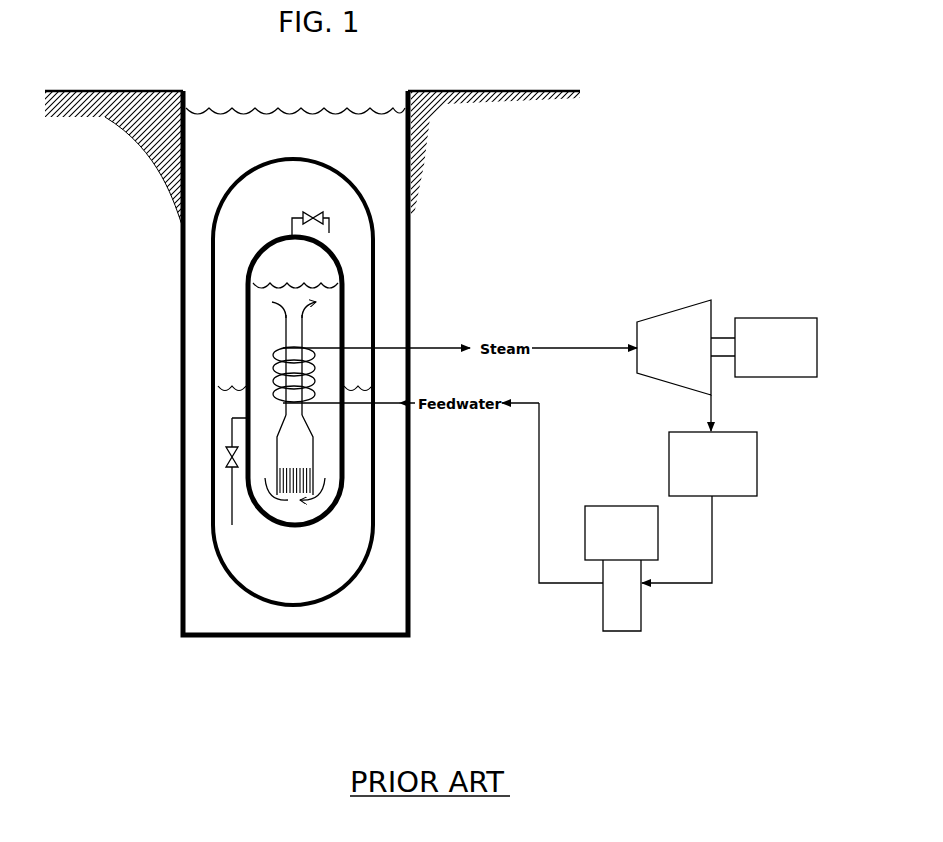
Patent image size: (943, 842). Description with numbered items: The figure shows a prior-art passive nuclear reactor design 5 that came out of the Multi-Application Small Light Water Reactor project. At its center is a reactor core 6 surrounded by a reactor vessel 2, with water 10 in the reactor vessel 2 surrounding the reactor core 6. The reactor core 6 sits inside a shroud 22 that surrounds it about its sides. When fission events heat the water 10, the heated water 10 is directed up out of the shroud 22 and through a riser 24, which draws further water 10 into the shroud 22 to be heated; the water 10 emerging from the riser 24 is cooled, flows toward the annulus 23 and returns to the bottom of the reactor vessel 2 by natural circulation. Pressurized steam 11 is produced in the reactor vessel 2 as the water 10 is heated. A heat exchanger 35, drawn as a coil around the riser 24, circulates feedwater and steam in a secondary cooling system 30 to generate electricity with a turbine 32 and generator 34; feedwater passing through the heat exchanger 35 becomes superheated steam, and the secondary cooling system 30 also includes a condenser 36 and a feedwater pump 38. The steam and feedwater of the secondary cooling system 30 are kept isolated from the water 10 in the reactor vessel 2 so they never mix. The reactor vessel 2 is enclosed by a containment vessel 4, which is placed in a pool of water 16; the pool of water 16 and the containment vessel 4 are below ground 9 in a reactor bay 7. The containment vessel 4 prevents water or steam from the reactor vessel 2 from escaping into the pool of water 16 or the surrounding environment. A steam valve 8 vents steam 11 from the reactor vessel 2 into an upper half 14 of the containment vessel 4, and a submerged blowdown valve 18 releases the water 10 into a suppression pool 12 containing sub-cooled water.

The reactor vessel 2 is at (348, 295).
The containment vessel 4 is at (380, 248).
The nuclear reactor design 5 is at (290, 367).
The reactor core 6 is at (323, 472).
The reactor bay 7 is at (182, 556).
The steam valve 8 is at (313, 215).
The ground 9 is at (565, 98).
The water 10 is at (270, 292).
The steam 11 is at (285, 258).
The suppression pool 12 is at (317, 565).
The upper half of the containment vessel 14 is at (277, 213).
The pool of water 16 is at (226, 158).
The submerged blowdown valve 18 is at (232, 440).
The shroud 22 is at (317, 453).
The annulus 23 is at (308, 413).
The riser 24 is at (310, 333).
The secondary cooling system 30 is at (701, 431).
The turbine 32 is at (684, 355).
The generator 34 is at (789, 357).
The heat exchanger 35 is at (268, 368).
The condenser 36 is at (724, 476).
The feedwater pump 38 is at (634, 540).